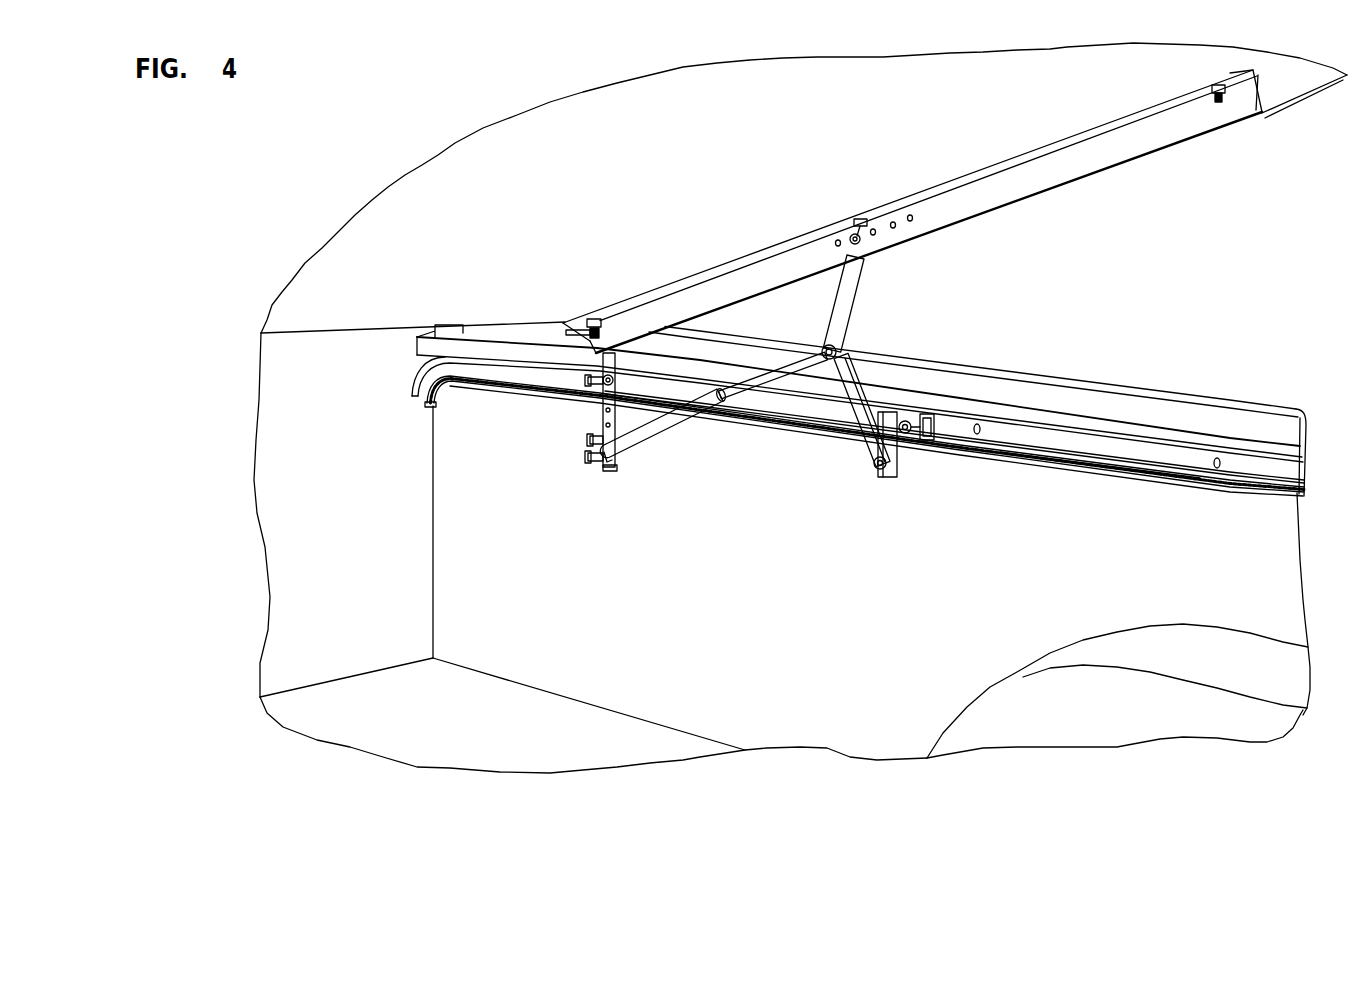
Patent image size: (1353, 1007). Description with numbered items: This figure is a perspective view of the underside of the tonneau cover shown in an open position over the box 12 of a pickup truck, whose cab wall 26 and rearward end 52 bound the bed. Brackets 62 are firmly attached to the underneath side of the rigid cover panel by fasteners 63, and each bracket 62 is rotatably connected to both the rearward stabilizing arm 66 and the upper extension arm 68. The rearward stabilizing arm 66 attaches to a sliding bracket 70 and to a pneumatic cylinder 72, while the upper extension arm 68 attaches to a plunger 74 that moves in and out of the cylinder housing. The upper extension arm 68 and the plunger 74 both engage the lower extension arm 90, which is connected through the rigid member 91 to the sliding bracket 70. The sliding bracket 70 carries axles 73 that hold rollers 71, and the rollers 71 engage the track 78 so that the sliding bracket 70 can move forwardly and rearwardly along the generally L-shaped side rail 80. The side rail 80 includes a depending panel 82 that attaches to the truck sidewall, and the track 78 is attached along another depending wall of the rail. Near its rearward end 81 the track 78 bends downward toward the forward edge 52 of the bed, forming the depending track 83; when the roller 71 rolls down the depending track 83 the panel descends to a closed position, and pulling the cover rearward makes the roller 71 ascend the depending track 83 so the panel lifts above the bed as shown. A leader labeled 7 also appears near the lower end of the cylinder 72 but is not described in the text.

The lower end of link tube 7 is at (627, 450).
The box 12 is at (493, 747).
The cab wall 26 is at (368, 530).
The rearward end 52 is at (358, 677).
The bracket 62 is at (1133, 140).
The fastener 63 is at (858, 222).
The rearward stabilizing arm 66 is at (608, 395).
The upper extension arm 68 is at (848, 287).
The sliding bracket 70 is at (828, 413).
The roller 71 is at (560, 432).
The pneumatic cylinder 72 is at (677, 428).
The axle 73 is at (927, 430).
The plunger 74 is at (750, 390).
The track 78 is at (1100, 450).
The side rail 80 is at (1270, 425).
The rearward end 81 is at (460, 373).
The depending panel 82 is at (1165, 412).
The depending track 83 is at (440, 398).
The lower extension arm 90 is at (850, 380).
The rigid member 91 is at (887, 437).